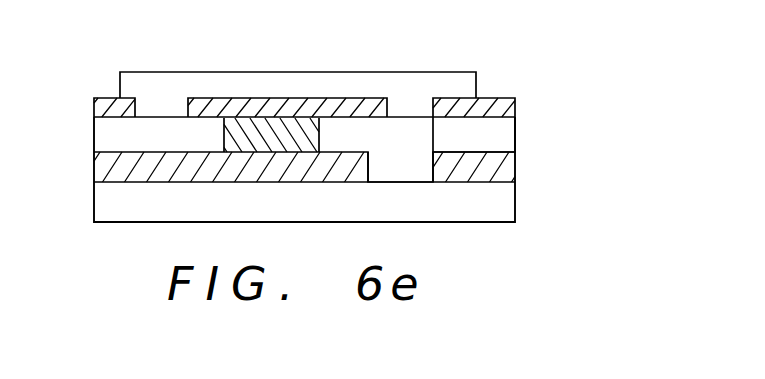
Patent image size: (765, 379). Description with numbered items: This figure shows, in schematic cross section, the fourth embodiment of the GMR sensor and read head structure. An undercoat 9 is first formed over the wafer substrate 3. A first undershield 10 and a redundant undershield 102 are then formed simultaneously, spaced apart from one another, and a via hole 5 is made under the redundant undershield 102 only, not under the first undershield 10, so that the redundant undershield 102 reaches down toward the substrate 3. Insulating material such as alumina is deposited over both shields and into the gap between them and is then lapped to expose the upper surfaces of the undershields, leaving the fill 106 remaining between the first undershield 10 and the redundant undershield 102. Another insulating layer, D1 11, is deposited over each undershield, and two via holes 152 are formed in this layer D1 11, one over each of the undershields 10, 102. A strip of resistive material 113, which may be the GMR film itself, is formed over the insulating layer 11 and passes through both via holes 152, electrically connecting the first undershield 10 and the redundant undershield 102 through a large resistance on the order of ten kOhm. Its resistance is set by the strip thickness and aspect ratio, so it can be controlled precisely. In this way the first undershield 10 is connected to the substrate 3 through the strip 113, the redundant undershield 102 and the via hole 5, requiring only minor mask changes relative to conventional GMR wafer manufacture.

The wafer substrate 3 is at (497, 200).
The via hole 5 is at (395, 168).
The undercoat 9 is at (118, 172).
The first undershield 10 is at (118, 133).
The insulating layer D1 11 is at (115, 113).
The redundant undershield 102 is at (497, 132).
The fill 106 is at (260, 130).
The strip of resistive material 113 is at (338, 88).
The via holes 152 is at (160, 107).